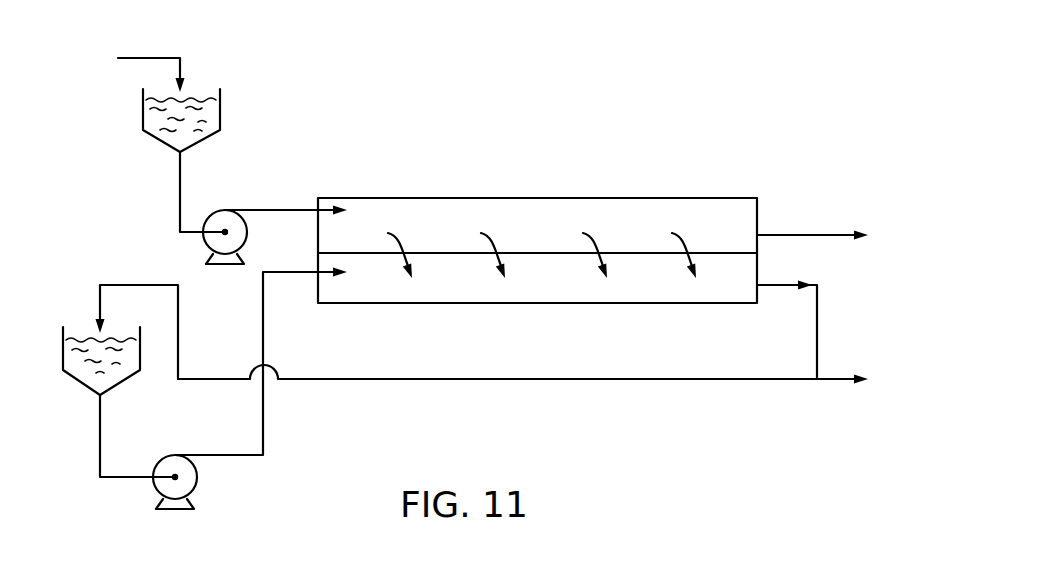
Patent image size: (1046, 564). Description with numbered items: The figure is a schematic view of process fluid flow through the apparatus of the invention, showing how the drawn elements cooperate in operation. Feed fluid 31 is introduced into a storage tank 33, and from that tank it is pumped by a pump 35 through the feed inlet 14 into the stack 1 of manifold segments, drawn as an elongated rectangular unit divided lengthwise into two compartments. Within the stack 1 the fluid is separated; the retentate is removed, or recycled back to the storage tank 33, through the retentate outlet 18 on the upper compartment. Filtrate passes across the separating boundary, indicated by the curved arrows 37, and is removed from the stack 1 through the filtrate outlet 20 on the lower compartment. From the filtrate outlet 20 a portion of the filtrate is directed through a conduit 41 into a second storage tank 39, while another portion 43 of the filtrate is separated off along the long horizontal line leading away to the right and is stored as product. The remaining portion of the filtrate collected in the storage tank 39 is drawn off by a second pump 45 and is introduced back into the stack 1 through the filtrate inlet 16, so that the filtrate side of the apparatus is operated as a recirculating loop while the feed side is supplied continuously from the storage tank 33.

The stack 1 is at (586, 177).
The feed inlet 14 is at (291, 210).
The filtrate inlet 16 is at (299, 272).
The retentate outlet 18 is at (785, 232).
The filtrate outlet 20 is at (786, 288).
The feed fluid 31 is at (150, 58).
The storage tank 33 is at (221, 109).
The pump 35 is at (218, 210).
The permeation flow arrows through membrane 37 is at (413, 265).
The storage tank 39 is at (85, 389).
The conduit 41 is at (140, 284).
The portion of the filtrate 43 is at (835, 382).
The pump 45 is at (197, 483).